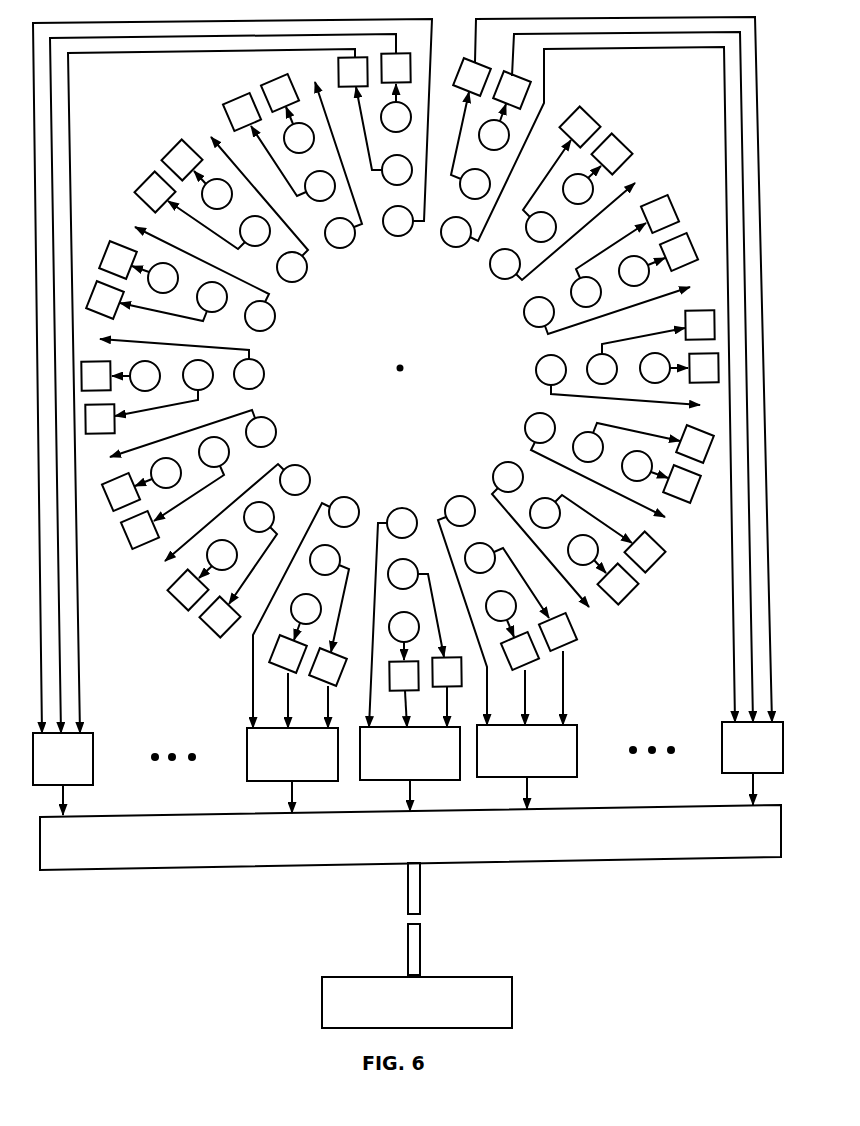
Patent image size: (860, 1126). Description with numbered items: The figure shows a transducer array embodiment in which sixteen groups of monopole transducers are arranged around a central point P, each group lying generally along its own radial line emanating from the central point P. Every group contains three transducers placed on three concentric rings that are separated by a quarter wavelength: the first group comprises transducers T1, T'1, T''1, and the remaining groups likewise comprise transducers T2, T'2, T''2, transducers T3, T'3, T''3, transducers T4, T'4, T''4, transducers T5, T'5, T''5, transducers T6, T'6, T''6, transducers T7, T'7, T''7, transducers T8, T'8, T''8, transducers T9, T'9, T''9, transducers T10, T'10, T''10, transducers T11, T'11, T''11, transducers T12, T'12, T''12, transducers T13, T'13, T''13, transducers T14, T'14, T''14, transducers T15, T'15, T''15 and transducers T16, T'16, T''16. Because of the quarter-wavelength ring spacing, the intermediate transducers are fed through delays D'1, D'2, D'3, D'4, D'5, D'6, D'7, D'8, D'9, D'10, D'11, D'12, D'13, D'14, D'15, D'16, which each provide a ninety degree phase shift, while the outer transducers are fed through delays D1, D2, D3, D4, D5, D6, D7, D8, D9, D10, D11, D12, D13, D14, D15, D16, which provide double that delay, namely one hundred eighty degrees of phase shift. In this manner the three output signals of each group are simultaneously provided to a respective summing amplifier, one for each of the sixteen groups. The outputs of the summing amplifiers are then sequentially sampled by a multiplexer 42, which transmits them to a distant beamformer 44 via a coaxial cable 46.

The transducer T1 is at (406, 106).
The transducer T'1 is at (408, 159).
The transducer T''1 is at (398, 239).
The delay D1 is at (408, 54).
The delay D'1 is at (345, 78).
The transducer T2 is at (312, 146).
The transducer T'2 is at (316, 202).
The transducer T''2 is at (345, 251).
The delay D2 is at (276, 80).
The delay D'2 is at (233, 103).
The transducer T3 is at (230, 195).
The transducer T'3 is at (258, 246).
The transducer T''3 is at (303, 280).
The delay D3 is at (174, 148).
The delay D'3 is at (148, 185).
The transducer T4 is at (175, 275).
The transducer T'4 is at (217, 310).
The transducer T''4 is at (278, 321).
The delay D4 is at (107, 246).
The delay D'4 is at (98, 288).
The transducer T5 is at (136, 357).
The transducer T'5 is at (185, 367).
The transducer T''5 is at (266, 372).
The delay D5 is at (90, 362).
The delay D'5 is at (95, 433).
The transducer T6 is at (161, 458).
The transducer T'6 is at (229, 458).
The transducer T''6 is at (278, 433).
The delay D6 is at (113, 492).
The delay D'6 is at (128, 534).
The transducer T7 is at (228, 544).
The transducer T'7 is at (274, 516).
The transducer T''7 is at (311, 473).
The delay D7 is at (173, 589).
The delay D'7 is at (213, 628).
The transducer T8 is at (322, 608).
The transducer T'8 is at (340, 556).
The transducer T''8 is at (350, 500).
The delay D8 is at (276, 667).
The delay D'8 is at (338, 682).
The transducer T9 is at (417, 622).
The transducer T'9 is at (415, 564).
The transducer T''9 is at (398, 510).
The delay D9 is at (392, 690).
The delay D'9 is at (459, 687).
The transducer T10 is at (506, 596).
The transducer T'10 is at (490, 549).
The transducer T''10 is at (452, 499).
The delay D10 is at (531, 665).
The delay D'10 is at (578, 640).
The transducer T11 is at (577, 536).
The transducer T'11 is at (551, 500).
The transducer T''11 is at (495, 469).
The delay D11 is at (630, 594).
The delay D'11 is at (664, 552).
The transducer T12 is at (636, 481).
The transducer T'12 is at (607, 446).
The transducer T''12 is at (519, 427).
The delay D12 is at (686, 503).
The delay D'12 is at (708, 439).
The transducer T13 is at (652, 355).
The transducer T'13 is at (621, 364).
The transducer T''13 is at (530, 370).
The delay D13 is at (700, 383).
The delay D'13 is at (711, 312).
The transducer T14 is at (624, 262).
The transducer T'14 is at (570, 286).
The transducer T''14 is at (516, 313).
The delay D14 is at (689, 243).
The delay D'14 is at (674, 207).
The transducer T15 is at (582, 178).
The transducer T'15 is at (524, 225).
The transducer T''15 is at (489, 272).
The delay D15 is at (622, 146).
The delay D'15 is at (593, 116).
The transducer T16 is at (510, 130).
The transducer T'16 is at (491, 176).
The transducer T''16 is at (448, 244).
The delay D16 is at (501, 76).
The delay D'16 is at (464, 65).
The central point P is at (402, 370).
The multiplexer 42 is at (700, 858).
The beamformer 44 is at (512, 990).
The coaxial cable 46 is at (420, 885).